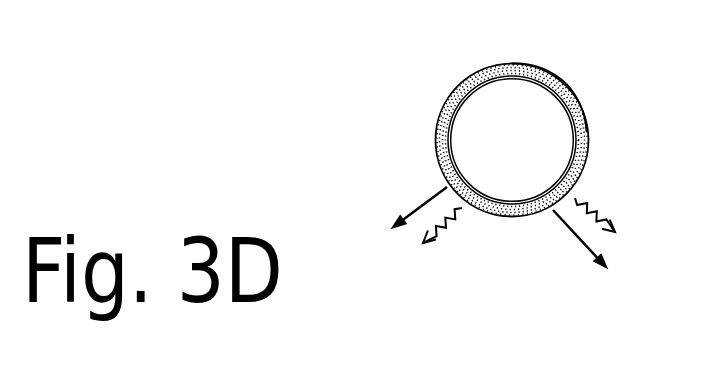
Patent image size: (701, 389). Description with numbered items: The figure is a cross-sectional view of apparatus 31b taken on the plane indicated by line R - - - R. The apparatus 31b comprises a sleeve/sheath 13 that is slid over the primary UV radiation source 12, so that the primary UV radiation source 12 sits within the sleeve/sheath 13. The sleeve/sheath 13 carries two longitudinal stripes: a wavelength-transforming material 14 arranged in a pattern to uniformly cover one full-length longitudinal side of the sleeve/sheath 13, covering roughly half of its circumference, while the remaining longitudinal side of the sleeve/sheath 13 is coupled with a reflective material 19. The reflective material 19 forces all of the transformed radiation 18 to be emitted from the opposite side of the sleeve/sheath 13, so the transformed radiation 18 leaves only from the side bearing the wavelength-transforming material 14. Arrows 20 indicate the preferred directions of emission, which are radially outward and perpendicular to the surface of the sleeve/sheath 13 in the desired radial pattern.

The primary UV radiation source 12 is at (452, 102).
The sleeve/sheath 13 is at (582, 108).
The wavelength-transforming material 14 is at (442, 153).
The transformed radiation 18 is at (521, 242).
The reflective material 19 is at (548, 75).
The arrows 20 is at (496, 247).
The apparatus 31b is at (567, 140).
The line R - - - R is at (510, 43).